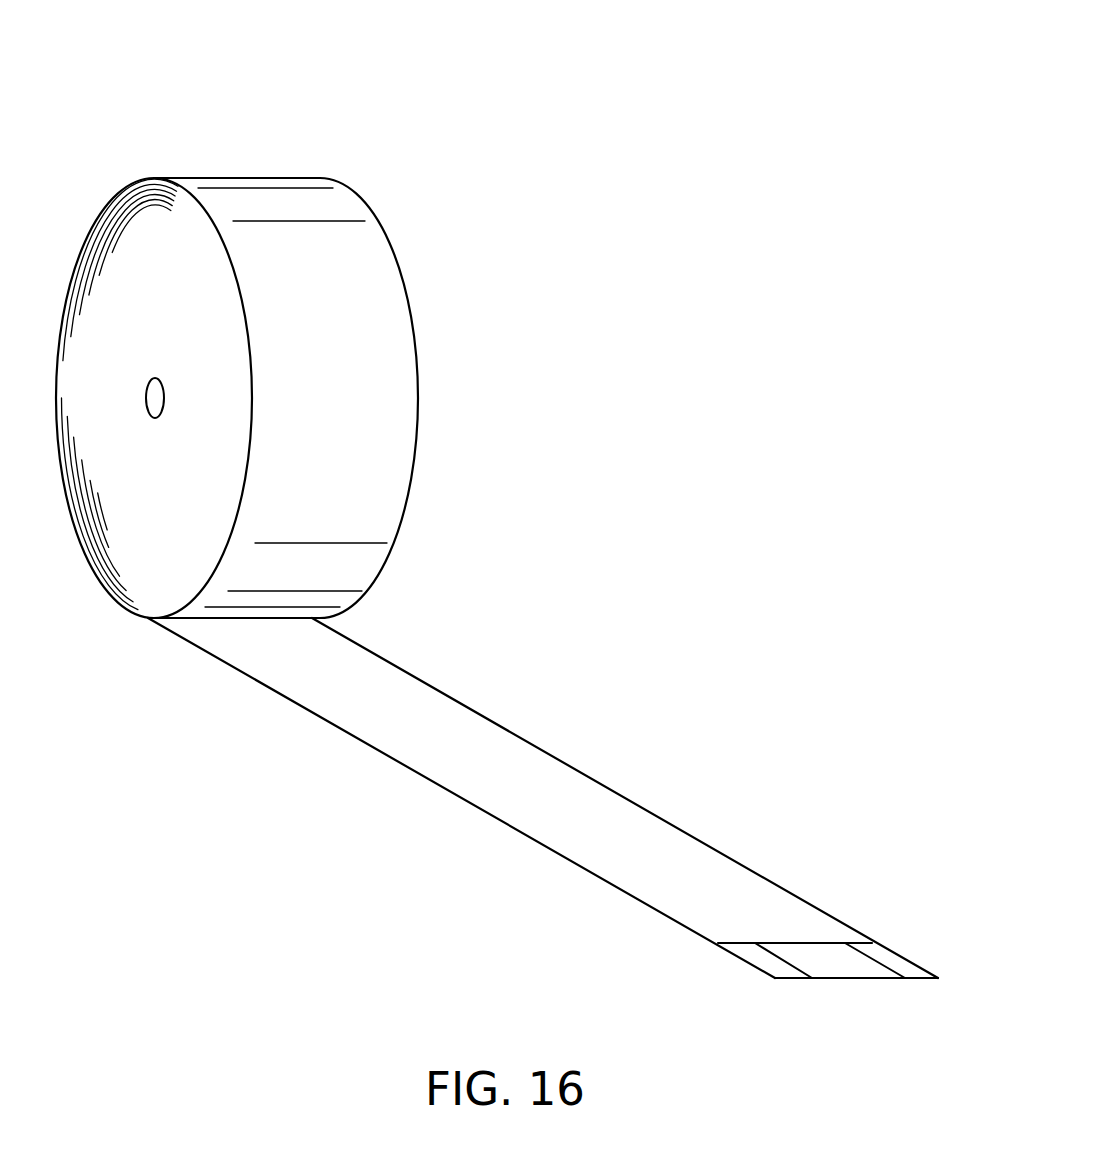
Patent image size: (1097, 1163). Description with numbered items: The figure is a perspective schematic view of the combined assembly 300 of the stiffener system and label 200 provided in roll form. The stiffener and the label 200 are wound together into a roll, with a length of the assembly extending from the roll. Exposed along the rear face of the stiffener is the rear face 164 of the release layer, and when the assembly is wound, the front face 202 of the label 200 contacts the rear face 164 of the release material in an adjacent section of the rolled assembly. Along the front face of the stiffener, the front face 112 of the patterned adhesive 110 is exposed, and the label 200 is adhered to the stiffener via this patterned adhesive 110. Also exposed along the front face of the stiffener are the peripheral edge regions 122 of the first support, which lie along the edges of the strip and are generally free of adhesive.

The combined assembly 300 is at (773, 95).
The rear face of the release layer 164 is at (372, 298).
The label 200 is at (560, 823).
The front face of the label 202 is at (812, 918).
The patterned adhesive 110 is at (845, 985).
The front face of the patterned adhesive 112 is at (842, 965).
The peripheral edge regions 122 is at (897, 958).